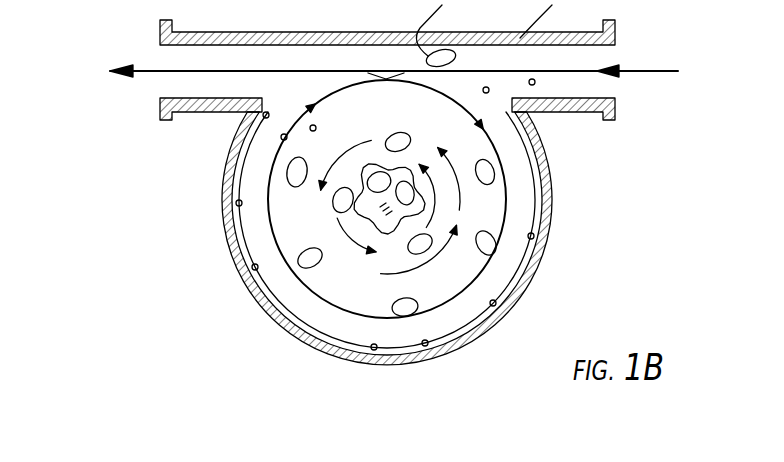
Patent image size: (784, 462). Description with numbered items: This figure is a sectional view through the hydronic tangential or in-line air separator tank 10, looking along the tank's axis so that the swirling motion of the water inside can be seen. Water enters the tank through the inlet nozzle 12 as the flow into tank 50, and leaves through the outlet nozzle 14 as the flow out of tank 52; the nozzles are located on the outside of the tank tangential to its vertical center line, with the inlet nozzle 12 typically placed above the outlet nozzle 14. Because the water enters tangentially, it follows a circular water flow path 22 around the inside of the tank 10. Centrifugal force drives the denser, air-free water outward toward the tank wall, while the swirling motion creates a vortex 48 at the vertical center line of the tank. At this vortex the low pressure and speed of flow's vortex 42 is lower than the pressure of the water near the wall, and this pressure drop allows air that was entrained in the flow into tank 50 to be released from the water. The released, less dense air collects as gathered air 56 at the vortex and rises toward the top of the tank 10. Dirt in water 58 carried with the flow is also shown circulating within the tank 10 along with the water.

The hydronic tangential or in-line air separator tank 10 is at (523, 310).
The inlet nozzle 12 is at (614, 51).
The outlet nozzle 14 is at (170, 55).
The water flow path 22 is at (504, 198).
The low pressure and speed of flow's vortex 42 is at (384, 232).
The vortex 48 is at (365, 226).
The flow into tank 50 is at (643, 75).
The flow out of tank 52 is at (153, 73).
The gathered air 56 is at (333, 197).
The dirt in water 58 is at (290, 345).